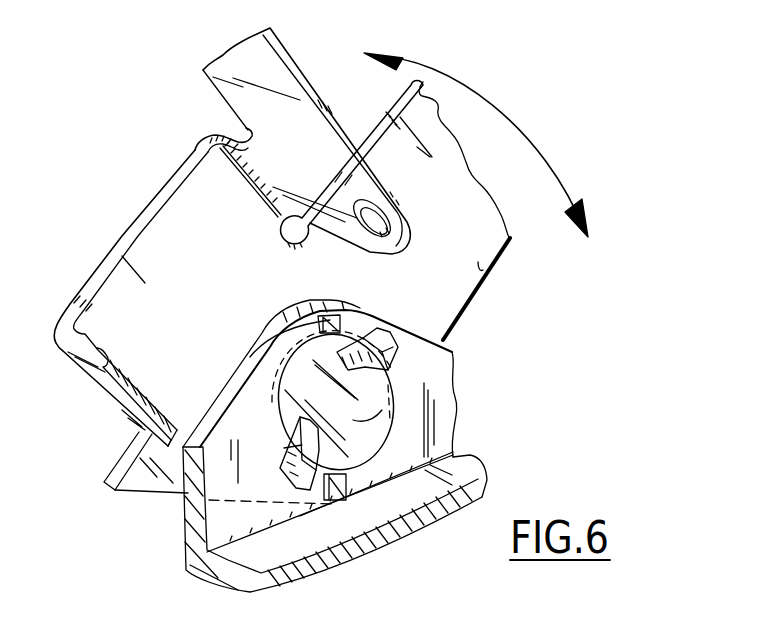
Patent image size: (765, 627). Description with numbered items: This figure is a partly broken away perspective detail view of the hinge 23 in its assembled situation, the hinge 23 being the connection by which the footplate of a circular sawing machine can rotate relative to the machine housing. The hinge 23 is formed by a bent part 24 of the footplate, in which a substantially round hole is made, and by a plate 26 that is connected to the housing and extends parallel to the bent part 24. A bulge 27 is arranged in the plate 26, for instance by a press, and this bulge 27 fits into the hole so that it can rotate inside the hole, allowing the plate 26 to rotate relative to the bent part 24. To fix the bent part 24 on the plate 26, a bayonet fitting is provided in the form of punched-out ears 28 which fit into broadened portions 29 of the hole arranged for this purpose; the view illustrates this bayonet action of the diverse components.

The hinge 23 is at (517, 427).
The bent part 24 is at (216, 512).
The plate 26 is at (490, 275).
The bulge 27 is at (390, 424).
The punched-out ears 28 is at (391, 343).
The broadened portions 29 is at (331, 315).